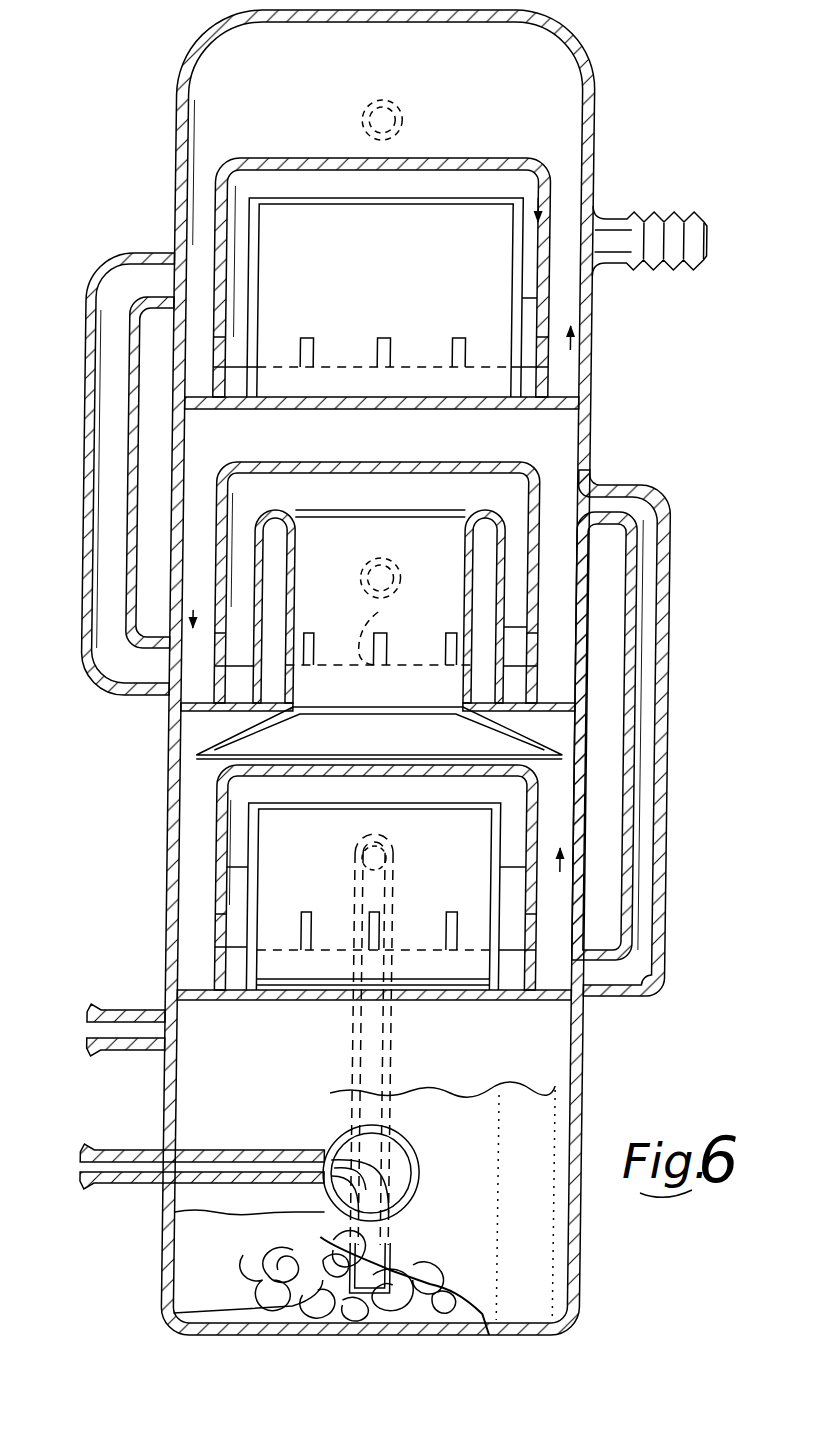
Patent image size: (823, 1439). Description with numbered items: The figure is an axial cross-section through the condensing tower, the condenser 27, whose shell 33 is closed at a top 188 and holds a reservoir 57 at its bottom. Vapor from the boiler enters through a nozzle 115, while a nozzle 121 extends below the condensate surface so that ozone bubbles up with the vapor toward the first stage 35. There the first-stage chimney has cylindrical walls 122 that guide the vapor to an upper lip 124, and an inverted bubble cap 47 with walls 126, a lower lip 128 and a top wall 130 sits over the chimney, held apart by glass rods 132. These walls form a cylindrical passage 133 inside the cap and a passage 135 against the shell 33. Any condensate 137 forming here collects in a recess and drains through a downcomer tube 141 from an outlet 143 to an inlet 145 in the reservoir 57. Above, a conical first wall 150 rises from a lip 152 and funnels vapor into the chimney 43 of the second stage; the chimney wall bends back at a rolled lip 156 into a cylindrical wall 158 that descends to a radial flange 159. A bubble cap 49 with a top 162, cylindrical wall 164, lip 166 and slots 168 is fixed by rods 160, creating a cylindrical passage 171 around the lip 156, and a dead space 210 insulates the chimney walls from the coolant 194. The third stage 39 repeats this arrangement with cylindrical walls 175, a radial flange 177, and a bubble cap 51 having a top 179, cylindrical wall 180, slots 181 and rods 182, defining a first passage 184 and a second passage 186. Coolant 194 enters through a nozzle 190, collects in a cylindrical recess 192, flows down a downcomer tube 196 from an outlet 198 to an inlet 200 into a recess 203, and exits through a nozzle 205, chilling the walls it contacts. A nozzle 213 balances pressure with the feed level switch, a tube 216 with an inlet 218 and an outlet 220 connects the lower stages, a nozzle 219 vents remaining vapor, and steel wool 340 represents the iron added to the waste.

The condenser 27 is at (616, 108).
The shell 33 is at (587, 1080).
The first stage 35 is at (155, 815).
The third stage 39 is at (153, 172).
The chimney 43 is at (452, 718).
The bubble cap 47 is at (205, 782).
The bubble cap 49 is at (272, 453).
The bubble cap 51 is at (277, 143).
The reservoir 57 is at (254, 1200).
The nozzle 115 is at (423, 1213).
The nozzle 121 is at (116, 1190).
The walls of the chimney 122 is at (495, 909).
The upper lip 124 is at (397, 802).
The walls of the bubble cap 126 is at (633, 932).
The lower lip 128 is at (542, 996).
The top wall 130 is at (372, 777).
The glass rods 132 is at (502, 877).
The cylindrical passage 133 is at (517, 840).
The passage 135 is at (668, 895).
The condensate 137 is at (252, 870).
The downcomer tube 141 is at (405, 1068).
The outlet 143 is at (402, 836).
The inlet 145 is at (337, 1277).
The first wall 150 is at (568, 725).
The lip 152 is at (578, 760).
The rolled lip 156 is at (338, 508).
The cylindrical wall 158 is at (538, 587).
The radial flange 159 is at (588, 700).
The rods 160 is at (543, 640).
The top 162 is at (440, 466).
The cylindrical wall 164 is at (598, 541).
The lip 166 is at (600, 666).
The slots 168 is at (360, 625).
The cylindrical passage 171 is at (522, 545).
The cylindrical walls 175 is at (502, 300).
The radial flange 177 is at (587, 431).
The top 179 is at (436, 159).
The cylindrical wall 180 is at (549, 192).
The slots 181 is at (386, 345).
The rods 182 is at (583, 322).
The first passage 184 is at (532, 205).
The second passage 186 is at (590, 345).
The top 188 is at (540, 11).
The nozzle 190 is at (649, 220).
The cylindrical recess 192 is at (239, 323).
The coolant 194 is at (230, 387).
The downcomer tube 196 is at (81, 400).
The outlet 198 is at (157, 317).
The inlet 200 is at (152, 628).
The recess 203 is at (198, 560).
The nozzle 205 is at (390, 604).
The dead space 210 is at (271, 593).
The nozzle 213 is at (129, 1014).
The tube 216 is at (637, 556).
The inlet 218 is at (637, 500).
The nozzle 219 is at (389, 106).
The outlet 220 is at (627, 993).
The steel wool 340 is at (257, 1297).